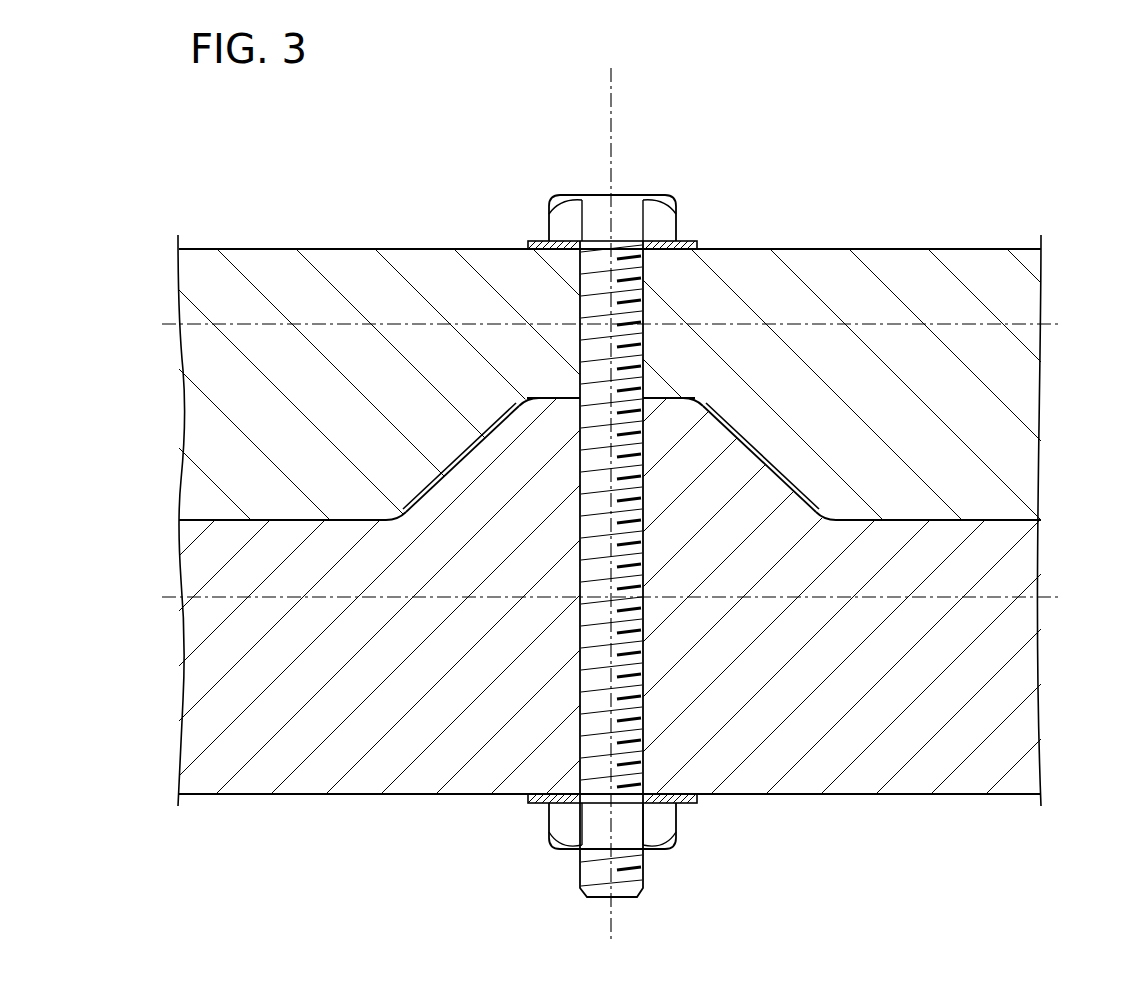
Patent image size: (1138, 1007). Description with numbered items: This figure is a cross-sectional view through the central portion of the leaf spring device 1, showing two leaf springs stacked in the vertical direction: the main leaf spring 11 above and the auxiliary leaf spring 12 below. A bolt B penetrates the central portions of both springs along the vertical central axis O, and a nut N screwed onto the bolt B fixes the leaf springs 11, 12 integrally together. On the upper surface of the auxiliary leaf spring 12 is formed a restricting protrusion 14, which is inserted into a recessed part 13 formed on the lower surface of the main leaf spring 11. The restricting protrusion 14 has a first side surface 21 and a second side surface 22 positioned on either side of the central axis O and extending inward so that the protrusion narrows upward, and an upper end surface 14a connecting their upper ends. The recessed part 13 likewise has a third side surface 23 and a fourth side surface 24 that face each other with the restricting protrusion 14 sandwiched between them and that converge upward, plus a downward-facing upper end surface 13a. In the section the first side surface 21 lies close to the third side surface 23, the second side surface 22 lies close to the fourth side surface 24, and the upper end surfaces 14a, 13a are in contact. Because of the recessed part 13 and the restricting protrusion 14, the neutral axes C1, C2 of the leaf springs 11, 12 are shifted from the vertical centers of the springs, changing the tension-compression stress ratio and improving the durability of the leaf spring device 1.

The leaf spring device 1 is at (993, 238).
The main leaf spring 11 is at (899, 245).
The auxiliary leaf spring 12 is at (951, 802).
The recessed part 13 is at (797, 499).
The upper end surface of recessed part 13a is at (572, 399).
The restricting protrusion 14 is at (729, 416).
The upper end surface of restricting protrusion 14a is at (657, 394).
The first side surface 21 is at (438, 479).
The second side surface 22 is at (750, 450).
The third side surface 23 is at (437, 483).
The fourth side surface 24 is at (765, 472).
The bolt B is at (660, 205).
The nut N is at (563, 843).
The central axis O is at (611, 118).
The neutral axis of main leaf spring C1 is at (1055, 322).
The neutral axis of auxiliary leaf spring C2 is at (1055, 594).